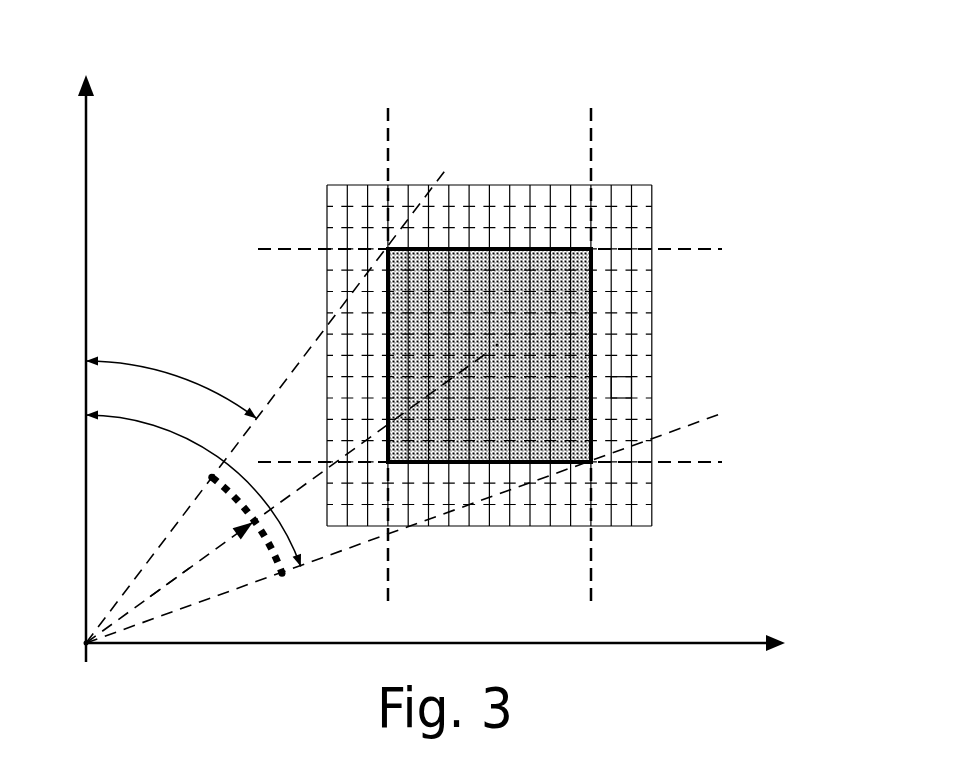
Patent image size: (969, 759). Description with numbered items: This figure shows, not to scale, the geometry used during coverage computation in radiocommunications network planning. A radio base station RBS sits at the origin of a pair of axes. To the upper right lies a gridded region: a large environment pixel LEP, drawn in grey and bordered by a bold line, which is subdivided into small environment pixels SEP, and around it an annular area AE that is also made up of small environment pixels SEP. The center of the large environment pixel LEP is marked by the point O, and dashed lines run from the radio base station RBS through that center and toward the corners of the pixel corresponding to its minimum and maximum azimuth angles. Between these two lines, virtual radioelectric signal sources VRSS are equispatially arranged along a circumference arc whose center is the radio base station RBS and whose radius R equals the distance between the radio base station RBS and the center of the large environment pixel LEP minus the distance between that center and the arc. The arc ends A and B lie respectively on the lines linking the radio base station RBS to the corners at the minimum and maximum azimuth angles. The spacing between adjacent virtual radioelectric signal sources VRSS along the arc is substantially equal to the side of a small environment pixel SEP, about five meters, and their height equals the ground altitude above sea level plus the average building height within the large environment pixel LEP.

The radio base station RBS is at (49, 641).
The end of circumference arc A is at (200, 466).
The end of circumference arc B is at (285, 589).
The radius R is at (170, 572).
The virtual radioelectric signal sources VRSS is at (234, 525).
The center point of polygon O is at (496, 346).
The annular area AE is at (660, 217).
The large environment pixel LEP is at (604, 323).
The small environment pixels SEP is at (628, 387).